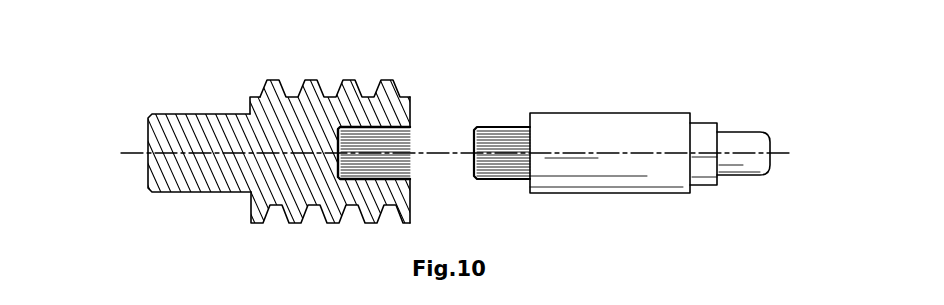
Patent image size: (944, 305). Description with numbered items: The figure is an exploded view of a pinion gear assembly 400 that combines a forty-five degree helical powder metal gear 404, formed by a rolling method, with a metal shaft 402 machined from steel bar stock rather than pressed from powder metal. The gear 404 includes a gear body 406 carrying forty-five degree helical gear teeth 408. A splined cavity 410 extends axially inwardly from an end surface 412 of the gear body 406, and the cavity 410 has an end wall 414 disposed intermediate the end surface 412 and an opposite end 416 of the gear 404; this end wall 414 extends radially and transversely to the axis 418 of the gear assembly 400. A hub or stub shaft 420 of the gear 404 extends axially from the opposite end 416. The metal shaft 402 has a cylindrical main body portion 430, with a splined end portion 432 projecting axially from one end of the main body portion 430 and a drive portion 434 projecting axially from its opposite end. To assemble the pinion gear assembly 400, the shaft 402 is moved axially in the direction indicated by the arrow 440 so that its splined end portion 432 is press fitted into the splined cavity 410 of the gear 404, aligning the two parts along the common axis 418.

The pinion gear assembly 400 is at (790, 117).
The metal shaft 402 is at (641, 74).
The helical powder metal gear 404 is at (267, 50).
The gear body 406 is at (352, 80).
The helical gear teeth 408 is at (262, 88).
The splined cavity 410 is at (398, 133).
The end surface 412 is at (411, 190).
The end wall 414 is at (336, 160).
The opposite end 416 is at (252, 198).
The axis 418 is at (127, 148).
The hub or stub shaft 420 is at (178, 114).
The cylindrical main body portion 430 is at (563, 194).
The splined end portion 432 is at (497, 126).
The drive portion 434 is at (737, 176).
The arrow 440 is at (700, 77).